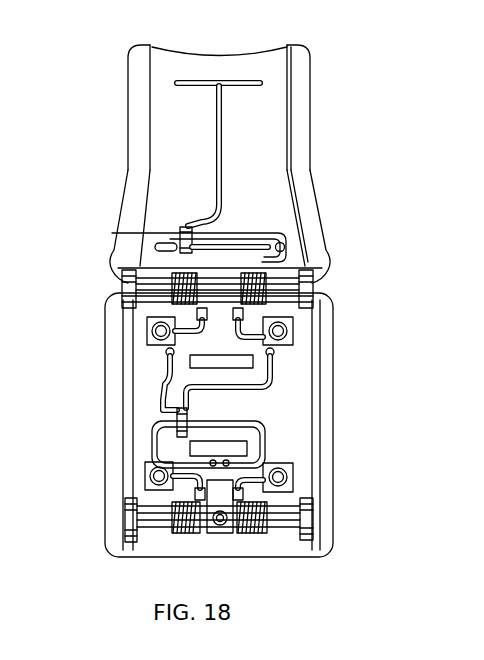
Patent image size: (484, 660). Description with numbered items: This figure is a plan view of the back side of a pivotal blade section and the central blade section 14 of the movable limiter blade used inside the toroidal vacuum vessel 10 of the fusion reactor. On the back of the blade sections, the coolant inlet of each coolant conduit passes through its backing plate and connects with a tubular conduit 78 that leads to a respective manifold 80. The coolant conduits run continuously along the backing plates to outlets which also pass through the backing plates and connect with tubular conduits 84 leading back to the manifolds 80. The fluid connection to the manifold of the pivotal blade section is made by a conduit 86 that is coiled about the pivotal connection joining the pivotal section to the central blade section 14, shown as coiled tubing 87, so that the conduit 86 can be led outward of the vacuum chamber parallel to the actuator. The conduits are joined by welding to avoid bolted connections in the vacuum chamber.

The vacuum vessel 10 is at (305, 128).
The central blade section 14 is at (327, 445).
The tubular conduit 78 is at (216, 140).
The manifold 80 is at (182, 228).
The tubular conduit 84 is at (232, 259).
The conduit 86 is at (284, 246).
The coiled tubing 87 is at (317, 288).